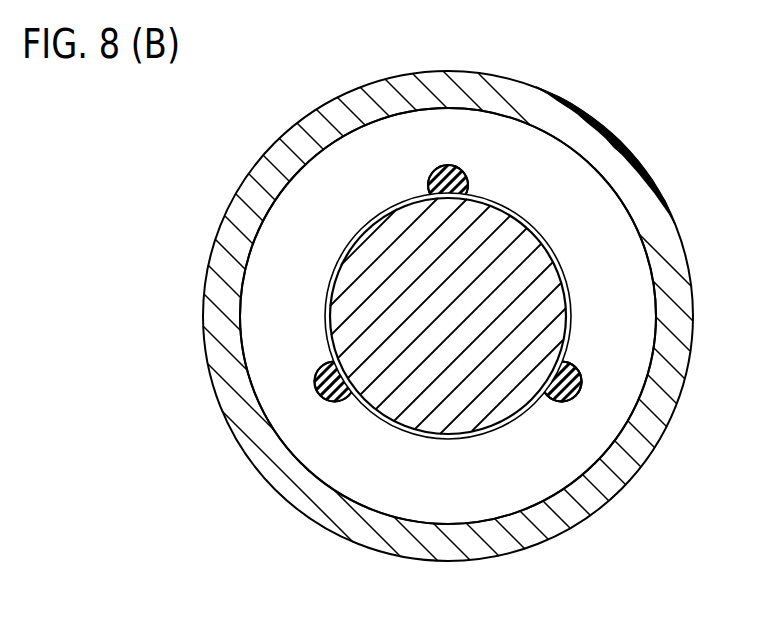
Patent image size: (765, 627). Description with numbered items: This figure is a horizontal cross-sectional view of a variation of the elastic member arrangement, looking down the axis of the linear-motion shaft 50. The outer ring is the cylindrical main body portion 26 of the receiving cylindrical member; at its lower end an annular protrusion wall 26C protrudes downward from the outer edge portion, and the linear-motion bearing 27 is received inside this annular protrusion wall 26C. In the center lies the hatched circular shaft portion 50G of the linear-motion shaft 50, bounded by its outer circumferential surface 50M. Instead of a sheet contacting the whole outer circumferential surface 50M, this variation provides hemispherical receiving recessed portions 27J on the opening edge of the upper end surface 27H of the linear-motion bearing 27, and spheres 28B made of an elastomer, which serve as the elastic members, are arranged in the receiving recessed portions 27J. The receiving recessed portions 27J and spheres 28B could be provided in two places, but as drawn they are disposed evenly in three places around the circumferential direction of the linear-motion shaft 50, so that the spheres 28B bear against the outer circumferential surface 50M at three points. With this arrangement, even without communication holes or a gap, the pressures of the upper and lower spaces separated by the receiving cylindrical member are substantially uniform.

The cylindrical main body portion 26 is at (547, 102).
The annular protrusion wall 26C is at (583, 123).
The linear-motion bearing 27 is at (597, 345).
The upper end surface 27H is at (607, 380).
The receiving recessed portions 27J is at (435, 167).
The spheres 28B is at (467, 181).
The linear-motion shaft 50 is at (533, 305).
The circular shaft portion 50G is at (527, 272).
The outer circumferential surface 50M is at (349, 242).